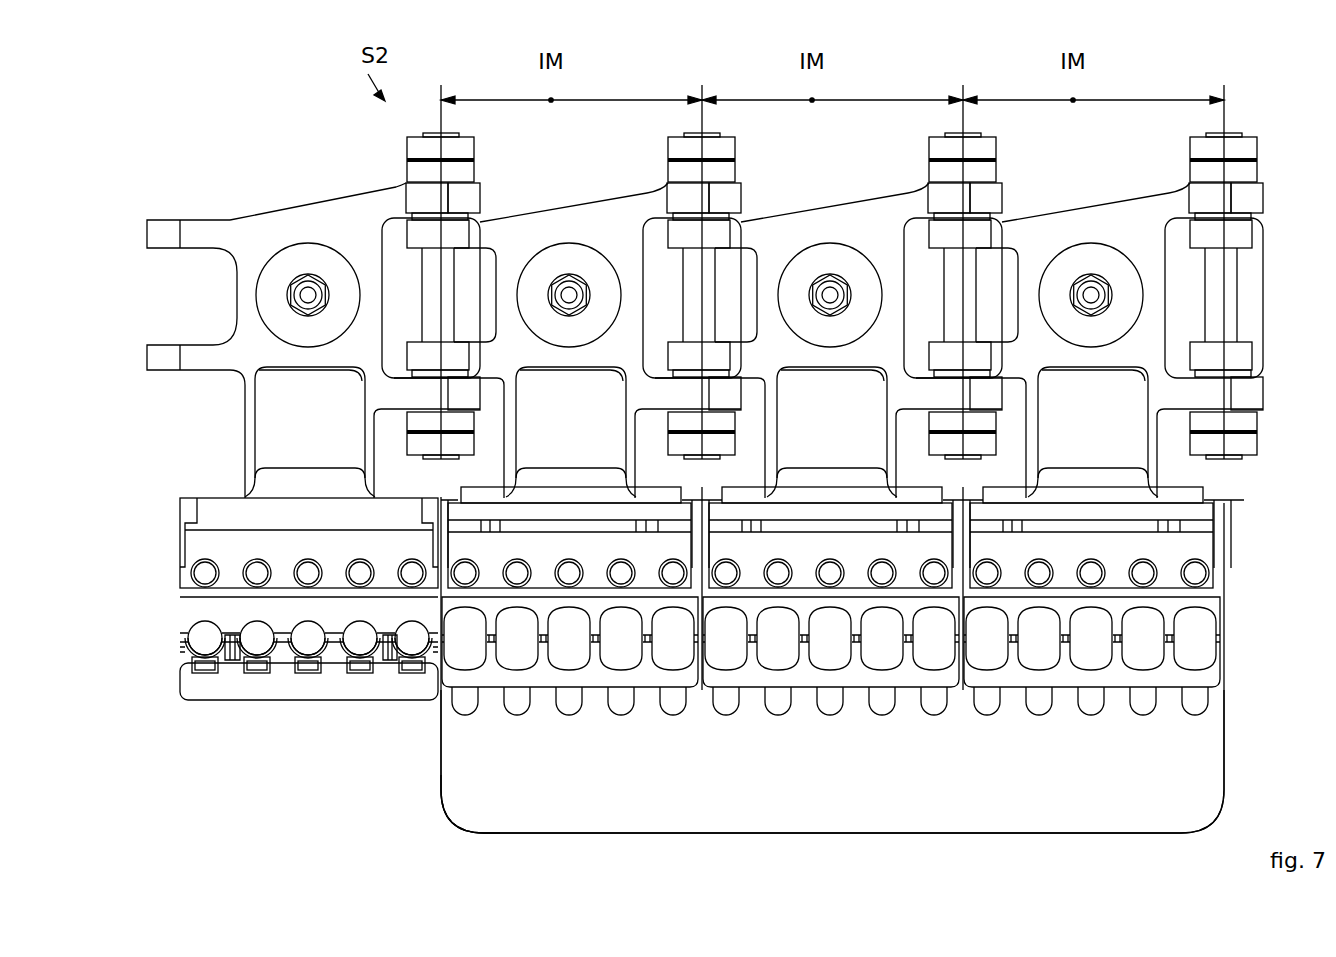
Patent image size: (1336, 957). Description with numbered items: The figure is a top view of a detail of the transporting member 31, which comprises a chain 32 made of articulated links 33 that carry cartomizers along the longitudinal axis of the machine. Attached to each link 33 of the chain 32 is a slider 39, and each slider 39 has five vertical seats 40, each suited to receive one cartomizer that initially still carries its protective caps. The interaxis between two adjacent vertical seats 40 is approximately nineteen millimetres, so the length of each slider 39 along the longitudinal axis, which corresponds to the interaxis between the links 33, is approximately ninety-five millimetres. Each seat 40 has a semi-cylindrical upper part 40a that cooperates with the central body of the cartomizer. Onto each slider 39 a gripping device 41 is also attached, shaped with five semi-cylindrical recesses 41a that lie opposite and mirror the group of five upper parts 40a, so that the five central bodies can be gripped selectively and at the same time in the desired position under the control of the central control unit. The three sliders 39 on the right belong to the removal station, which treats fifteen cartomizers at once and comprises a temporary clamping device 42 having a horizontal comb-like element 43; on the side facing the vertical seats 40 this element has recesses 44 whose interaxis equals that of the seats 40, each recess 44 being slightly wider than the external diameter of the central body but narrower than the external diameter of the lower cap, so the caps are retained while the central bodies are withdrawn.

The transporting member 31 is at (135, 309).
The chain 32 is at (247, 208).
The articulated link 33 is at (312, 225).
The slider 39 is at (297, 485).
The vertical seat 40 is at (403, 612).
The semi-cylindrical upper part 40a is at (295, 628).
The gripping device 41 is at (237, 687).
The semi-cylindrical recess 41a is at (200, 660).
The temporary clamping device 42 is at (438, 816).
The horizontal comb-like element 43 is at (478, 810).
The recess 44 is at (583, 700).